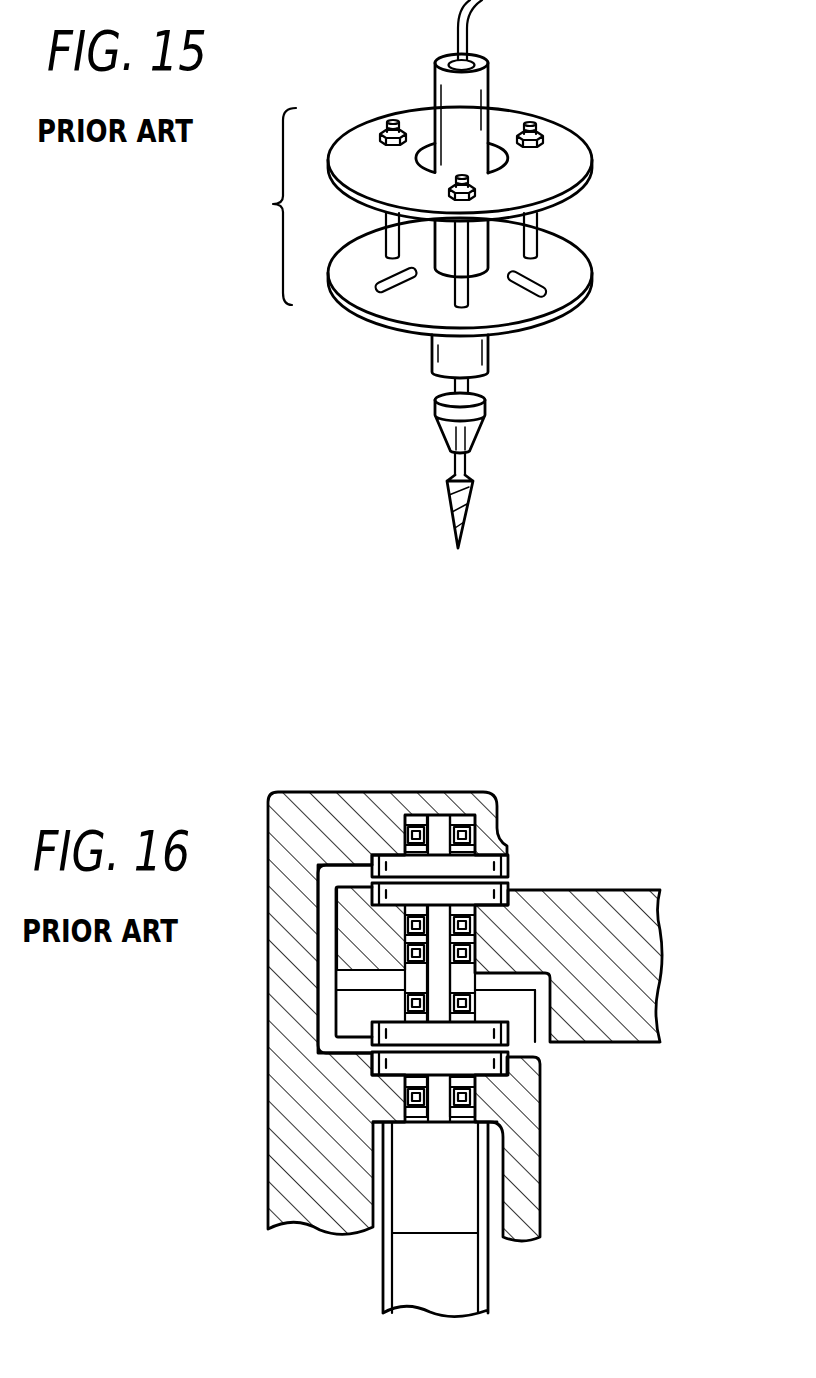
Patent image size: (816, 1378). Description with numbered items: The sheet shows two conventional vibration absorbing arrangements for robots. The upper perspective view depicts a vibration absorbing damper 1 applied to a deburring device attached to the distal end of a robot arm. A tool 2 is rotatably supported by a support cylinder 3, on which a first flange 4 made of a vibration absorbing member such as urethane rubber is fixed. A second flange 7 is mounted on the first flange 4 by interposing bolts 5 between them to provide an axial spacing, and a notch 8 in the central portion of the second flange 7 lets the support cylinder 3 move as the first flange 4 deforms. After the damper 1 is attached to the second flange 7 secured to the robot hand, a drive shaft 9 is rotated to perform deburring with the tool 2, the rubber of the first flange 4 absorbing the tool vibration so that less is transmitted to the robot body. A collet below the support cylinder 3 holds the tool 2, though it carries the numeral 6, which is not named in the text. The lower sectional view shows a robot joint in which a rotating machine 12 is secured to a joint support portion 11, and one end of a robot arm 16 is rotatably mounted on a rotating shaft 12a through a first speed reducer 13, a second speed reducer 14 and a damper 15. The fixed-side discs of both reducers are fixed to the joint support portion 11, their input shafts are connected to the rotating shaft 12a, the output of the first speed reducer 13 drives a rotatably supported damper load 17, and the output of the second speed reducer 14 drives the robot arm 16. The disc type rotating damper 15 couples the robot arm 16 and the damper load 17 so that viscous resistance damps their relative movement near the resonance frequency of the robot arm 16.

In FIG. 15, the vibration absorbing damper 1 is at (274, 206).
In FIG. 15, the tool 2 is at (460, 548).
In FIG. 15, the support cylinder 3 is at (488, 355).
In FIG. 15, the first flange 4 is at (592, 278).
In FIG. 15, the bolts 5 is at (542, 245).
In FIG. 15, the collet chuck 6 is at (485, 413).
In FIG. 15, the second flange 7 is at (486, 138).
In FIG. 15, the notch 8 is at (423, 160).
In FIG. 15, the drive shaft 9 is at (484, 62).
In FIG. 16, the joint support portion 11 is at (268, 1183).
In FIG. 16, the rotating machine 12 is at (478, 1200).
In FIG. 16, the rotating shaft 12a is at (437, 1124).
In FIG. 16, the first speed reducer 13 is at (510, 1063).
In FIG. 16, the second speed reducer 14 is at (510, 862).
In FIG. 16, the rotating damper 15 is at (535, 985).
In FIG. 16, the robot arm 16 is at (650, 947).
In FIG. 16, the damper load 17 is at (533, 1018).